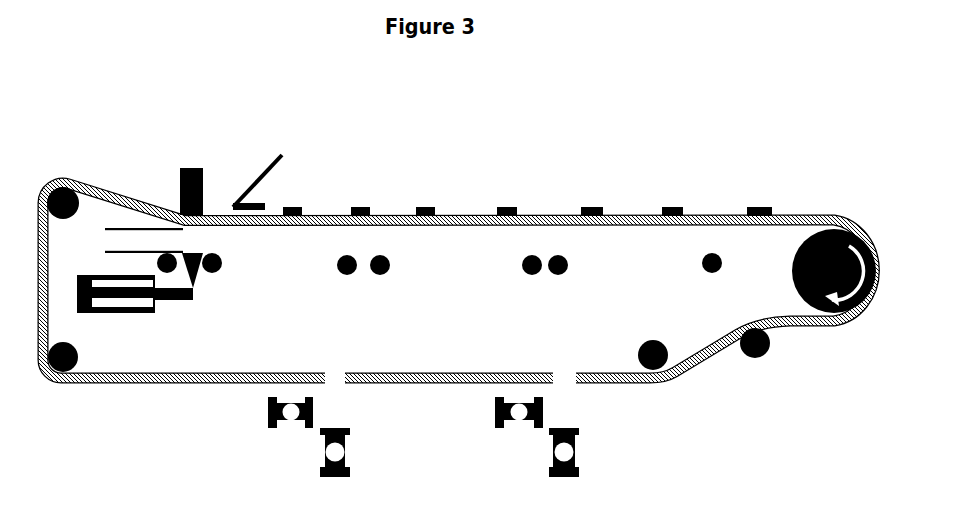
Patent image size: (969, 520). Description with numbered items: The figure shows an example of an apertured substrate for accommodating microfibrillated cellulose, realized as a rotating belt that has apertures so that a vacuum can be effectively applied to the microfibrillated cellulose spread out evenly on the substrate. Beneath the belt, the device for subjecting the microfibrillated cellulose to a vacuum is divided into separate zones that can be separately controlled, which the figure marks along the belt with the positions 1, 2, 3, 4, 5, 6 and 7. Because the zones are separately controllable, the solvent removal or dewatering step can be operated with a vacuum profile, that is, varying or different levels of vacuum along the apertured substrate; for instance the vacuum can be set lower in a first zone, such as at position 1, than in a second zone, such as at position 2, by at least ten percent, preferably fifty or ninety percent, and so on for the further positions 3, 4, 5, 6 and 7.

The zone 1 marker 1 is at (292, 199).
The zone 2 marker 2 is at (360, 199).
The zone 3 marker 3 is at (425, 199).
The zone 4 marker 4 is at (507, 199).
The zone 5 marker 5 is at (592, 199).
The zone 6 marker 6 is at (672, 199).
The zone 7 marker 7 is at (759, 199).